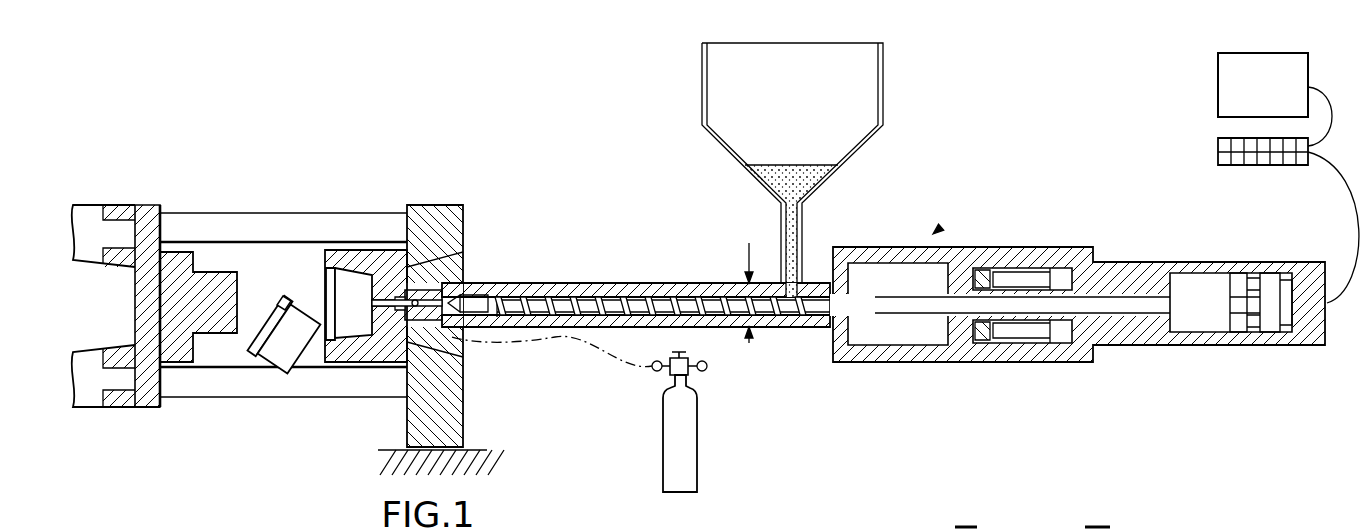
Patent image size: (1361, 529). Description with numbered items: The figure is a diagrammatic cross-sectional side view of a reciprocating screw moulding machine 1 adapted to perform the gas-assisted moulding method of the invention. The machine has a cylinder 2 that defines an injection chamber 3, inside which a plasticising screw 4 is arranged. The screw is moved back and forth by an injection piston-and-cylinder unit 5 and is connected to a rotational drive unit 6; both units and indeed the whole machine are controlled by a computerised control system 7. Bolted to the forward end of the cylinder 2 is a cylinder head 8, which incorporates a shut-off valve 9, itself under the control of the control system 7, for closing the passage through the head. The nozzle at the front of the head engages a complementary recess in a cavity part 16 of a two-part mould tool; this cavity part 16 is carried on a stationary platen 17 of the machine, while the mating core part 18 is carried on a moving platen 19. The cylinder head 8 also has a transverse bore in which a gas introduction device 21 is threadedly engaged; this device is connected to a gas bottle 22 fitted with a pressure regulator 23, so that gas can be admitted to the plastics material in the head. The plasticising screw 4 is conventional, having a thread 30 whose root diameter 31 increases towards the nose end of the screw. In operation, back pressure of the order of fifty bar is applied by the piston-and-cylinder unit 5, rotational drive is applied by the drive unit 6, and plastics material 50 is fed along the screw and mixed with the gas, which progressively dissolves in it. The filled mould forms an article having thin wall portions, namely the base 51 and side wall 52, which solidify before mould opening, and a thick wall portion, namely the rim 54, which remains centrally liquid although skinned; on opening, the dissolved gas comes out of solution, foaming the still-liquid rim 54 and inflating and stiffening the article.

The reciprocating screw moulding machine 1 is at (936, 231).
The cylinder 2 is at (610, 283).
The injection chamber 3 is at (470, 297).
The plasticising screw 4 is at (530, 290).
The injection piston-and-cylinder unit 5 is at (1197, 328).
The rotational drive unit 6 is at (1043, 335).
The computerised control system 7 is at (1218, 83).
The cylinder head 8 is at (433, 290).
The shut-off valve 9 is at (378, 362).
The cavity part 16 is at (378, 250).
The stationary platen 17 is at (440, 208).
The core part 18 is at (232, 270).
The moving platen 19 is at (157, 204).
The gas introduction device 21 is at (450, 337).
The gas bottle 22 is at (690, 462).
The pressure regulator 23 is at (672, 354).
The thread 30 is at (673, 292).
The root diameter 31 is at (751, 345).
The plastics material 50 is at (820, 185).
The base 51 is at (300, 360).
The side wall 52 is at (262, 365).
The rim 54 is at (288, 297).